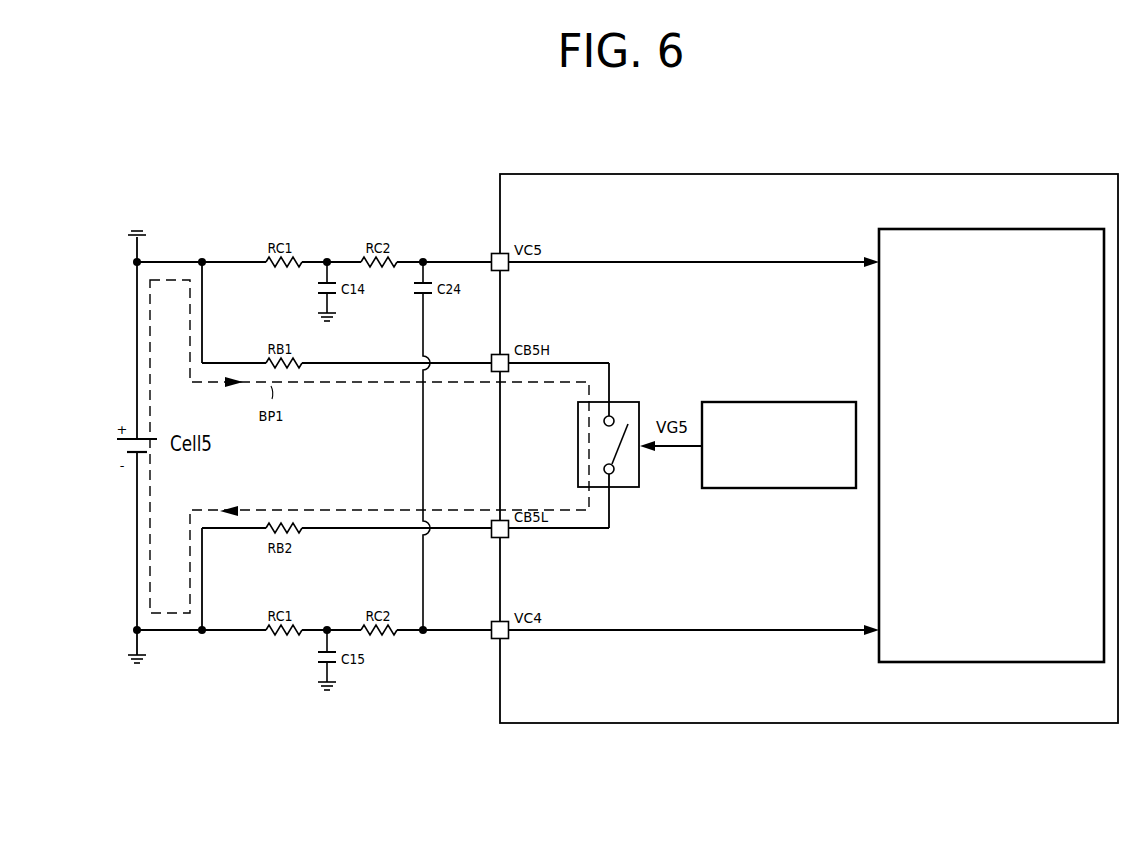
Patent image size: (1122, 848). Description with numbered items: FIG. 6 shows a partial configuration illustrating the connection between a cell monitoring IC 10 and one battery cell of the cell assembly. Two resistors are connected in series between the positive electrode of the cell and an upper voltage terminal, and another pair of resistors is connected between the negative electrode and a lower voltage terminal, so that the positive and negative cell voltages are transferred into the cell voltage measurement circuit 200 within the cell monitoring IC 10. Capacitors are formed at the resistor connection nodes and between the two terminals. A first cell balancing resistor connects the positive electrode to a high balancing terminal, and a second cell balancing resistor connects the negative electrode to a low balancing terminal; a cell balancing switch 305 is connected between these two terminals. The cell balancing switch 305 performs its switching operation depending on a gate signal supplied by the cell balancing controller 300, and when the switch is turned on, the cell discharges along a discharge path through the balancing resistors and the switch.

The battery monitoring integrated circuit 10 is at (753, 172).
The cell voltage measurement circuit 200 is at (934, 228).
The cell balancing controller 300 is at (778, 401).
The cell balancing switch 305 is at (628, 401).